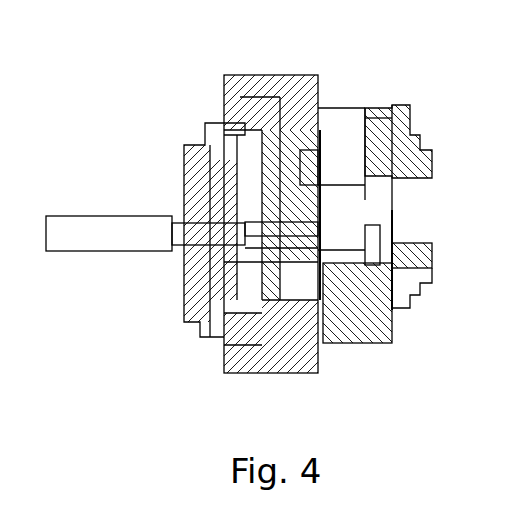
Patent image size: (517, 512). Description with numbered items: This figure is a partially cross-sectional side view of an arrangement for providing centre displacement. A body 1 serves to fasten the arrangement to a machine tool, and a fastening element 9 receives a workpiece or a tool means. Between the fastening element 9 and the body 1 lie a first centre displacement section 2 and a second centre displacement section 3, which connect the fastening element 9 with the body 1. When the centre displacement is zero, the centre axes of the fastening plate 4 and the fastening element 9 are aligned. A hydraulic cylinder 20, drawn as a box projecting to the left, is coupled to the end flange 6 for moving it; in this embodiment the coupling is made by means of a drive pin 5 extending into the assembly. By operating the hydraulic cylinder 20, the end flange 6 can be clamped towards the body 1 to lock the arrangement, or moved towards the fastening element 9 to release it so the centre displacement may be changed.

The body 1 is at (228, 90).
The first centre displacement section 2 is at (273, 100).
The second centre displacement section 3 is at (310, 75).
The fastening plate 4 is at (196, 176).
The drive pin 5 is at (247, 255).
The end flange 6 is at (333, 298).
The fastening element 9 is at (365, 108).
The hydraulic cylinder 20 is at (100, 254).